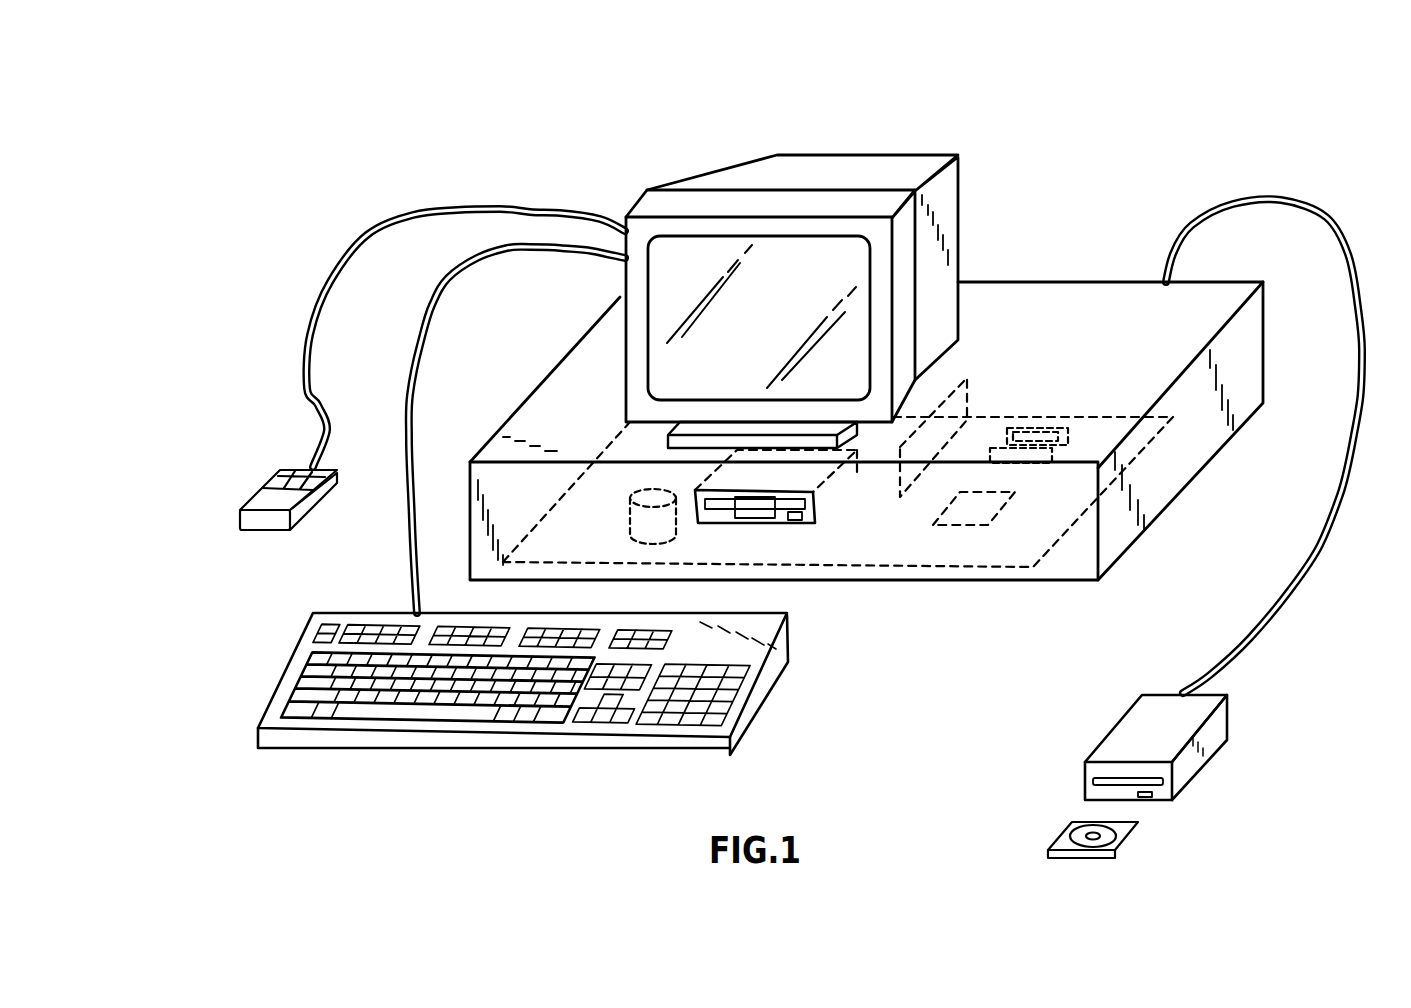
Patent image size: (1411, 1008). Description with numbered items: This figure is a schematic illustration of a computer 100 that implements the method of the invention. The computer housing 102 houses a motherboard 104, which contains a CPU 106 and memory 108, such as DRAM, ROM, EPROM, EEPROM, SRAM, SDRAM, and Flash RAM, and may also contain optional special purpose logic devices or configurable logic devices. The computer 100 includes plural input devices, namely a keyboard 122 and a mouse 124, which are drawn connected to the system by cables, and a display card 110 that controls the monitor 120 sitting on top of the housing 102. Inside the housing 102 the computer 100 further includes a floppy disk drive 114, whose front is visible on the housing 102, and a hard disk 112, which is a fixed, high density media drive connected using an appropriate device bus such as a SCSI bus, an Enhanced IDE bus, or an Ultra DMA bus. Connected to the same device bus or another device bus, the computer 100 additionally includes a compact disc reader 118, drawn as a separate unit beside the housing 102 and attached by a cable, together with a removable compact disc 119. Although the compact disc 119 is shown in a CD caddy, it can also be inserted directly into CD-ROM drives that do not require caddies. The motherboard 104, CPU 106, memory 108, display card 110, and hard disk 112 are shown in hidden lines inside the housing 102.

The computer 100 is at (224, 66).
The computer housing 102 is at (1058, 292).
The motherboard 104 is at (1110, 425).
The CPU 106 is at (988, 508).
The memory 108 is at (1023, 435).
The display card 110 is at (967, 393).
The hard disk 112 is at (630, 522).
The floppy disk drive 114 is at (808, 518).
The compact disc reader 118 is at (1137, 712).
The compact disc 119 is at (1133, 835).
The monitor 120 is at (862, 173).
The keyboard 122 is at (783, 665).
The mouse 124 is at (313, 500).